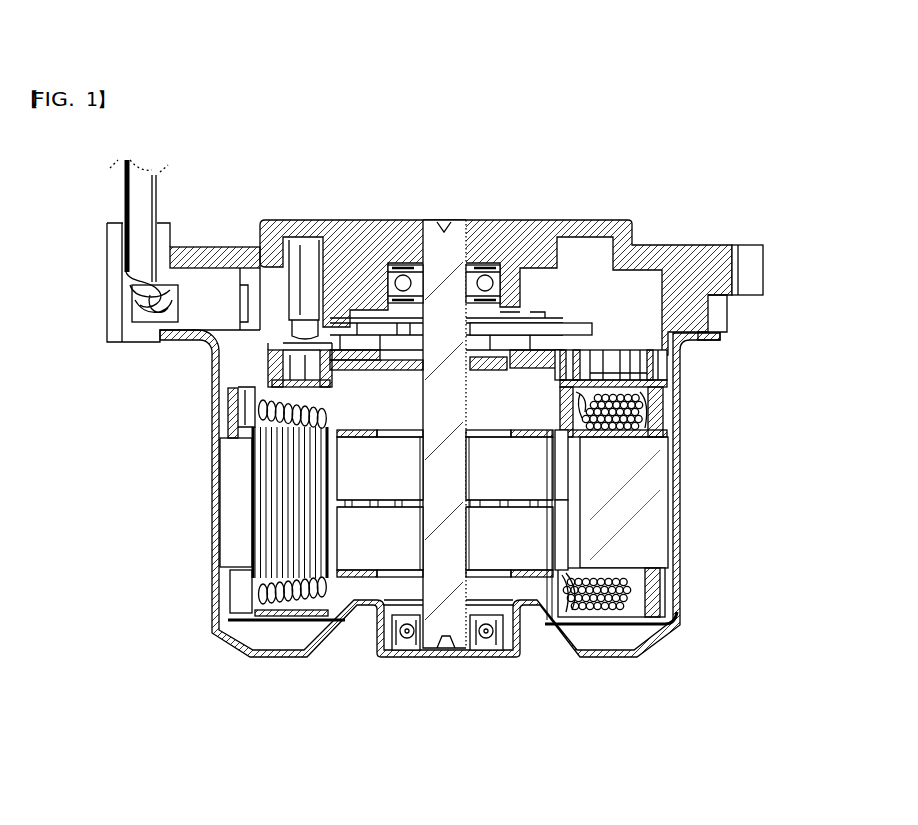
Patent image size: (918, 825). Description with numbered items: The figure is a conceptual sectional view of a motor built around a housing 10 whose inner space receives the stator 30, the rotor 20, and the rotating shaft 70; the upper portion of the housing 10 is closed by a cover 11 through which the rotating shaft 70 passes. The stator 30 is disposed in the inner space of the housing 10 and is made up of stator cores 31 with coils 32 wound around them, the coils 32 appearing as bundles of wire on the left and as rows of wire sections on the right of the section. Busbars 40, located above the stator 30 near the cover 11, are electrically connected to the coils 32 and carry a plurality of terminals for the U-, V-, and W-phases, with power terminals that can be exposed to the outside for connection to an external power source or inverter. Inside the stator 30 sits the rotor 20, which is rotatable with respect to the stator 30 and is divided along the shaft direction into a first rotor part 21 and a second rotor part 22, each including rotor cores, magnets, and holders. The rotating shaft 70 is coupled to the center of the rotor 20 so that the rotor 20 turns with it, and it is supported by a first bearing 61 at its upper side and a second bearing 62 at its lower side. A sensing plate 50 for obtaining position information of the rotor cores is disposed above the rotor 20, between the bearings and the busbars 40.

The housing 10 is at (682, 588).
The cover 11 is at (700, 308).
The rotor 20 is at (742, 483).
The first rotor part 21 is at (566, 466).
The second rotor part 22 is at (566, 527).
The stator 30 is at (513, 504).
The stator core 31 is at (653, 458).
The coil 32 is at (660, 405).
The busbar 40 is at (622, 347).
The sensing plate 50 is at (586, 312).
The first bearing 61 is at (498, 278).
The second bearing 62 is at (493, 650).
The rotating shaft 70 is at (448, 632).